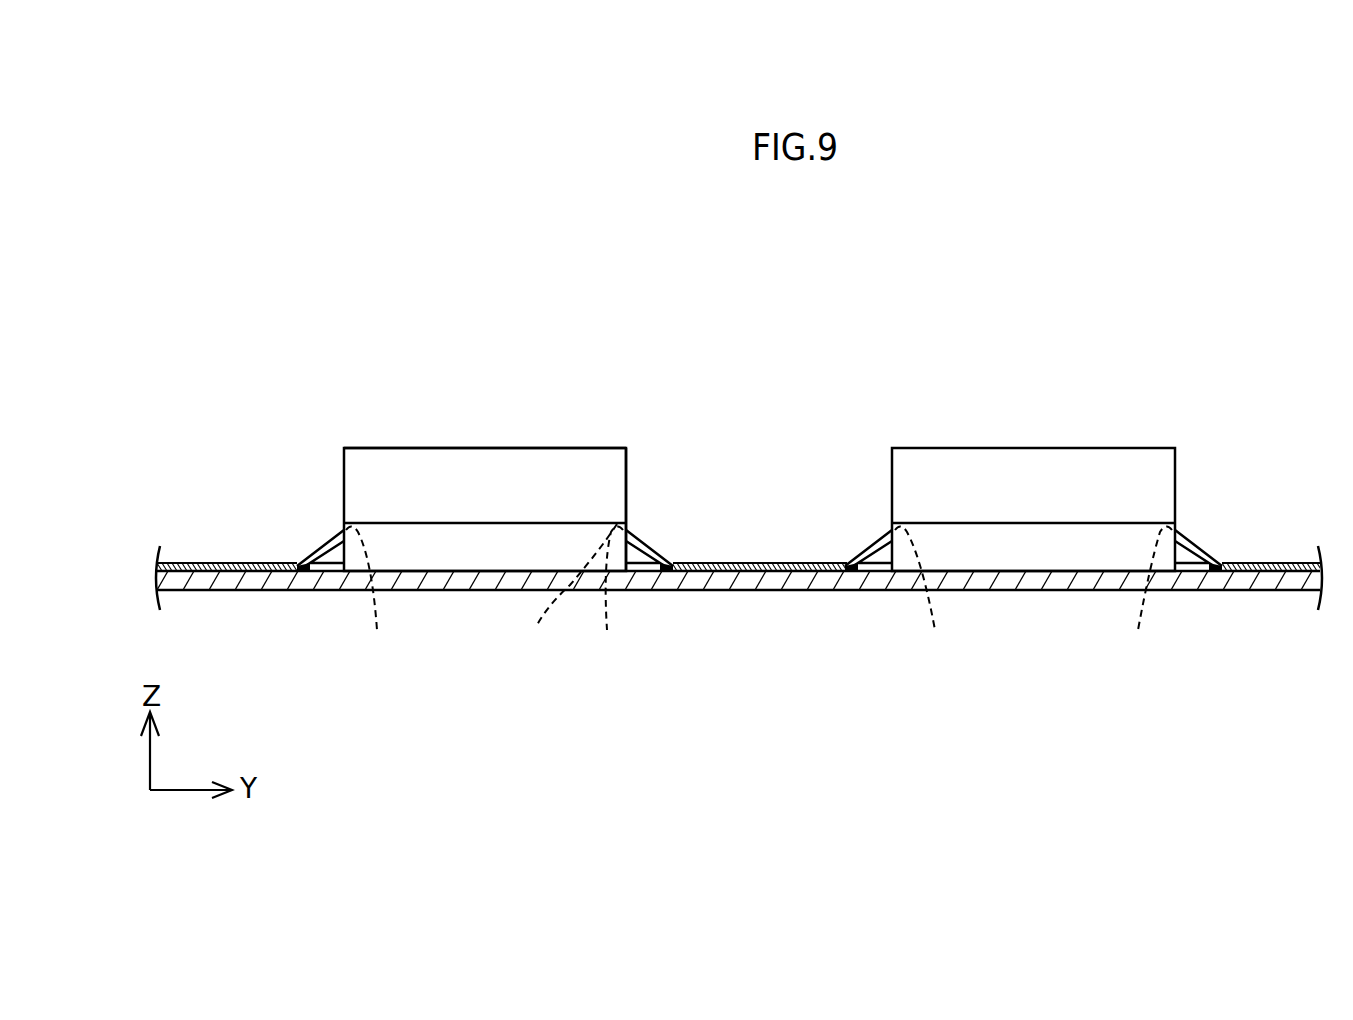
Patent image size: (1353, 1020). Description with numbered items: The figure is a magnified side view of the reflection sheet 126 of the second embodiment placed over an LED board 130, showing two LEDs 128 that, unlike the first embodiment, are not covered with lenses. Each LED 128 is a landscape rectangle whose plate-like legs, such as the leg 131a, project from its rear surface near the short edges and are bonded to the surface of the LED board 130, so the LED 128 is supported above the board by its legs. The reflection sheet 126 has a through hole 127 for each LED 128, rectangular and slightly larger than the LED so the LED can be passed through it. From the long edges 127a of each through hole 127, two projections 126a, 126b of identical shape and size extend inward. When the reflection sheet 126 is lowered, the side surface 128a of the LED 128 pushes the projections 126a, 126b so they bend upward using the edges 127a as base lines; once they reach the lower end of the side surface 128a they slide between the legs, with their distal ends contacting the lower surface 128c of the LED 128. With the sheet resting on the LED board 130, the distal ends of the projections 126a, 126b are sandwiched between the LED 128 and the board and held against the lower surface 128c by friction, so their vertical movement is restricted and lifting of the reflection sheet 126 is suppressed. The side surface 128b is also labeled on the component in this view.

The reflection sheet 126 is at (724, 568).
The projection 126a is at (657, 592).
The projection 126b is at (876, 592).
The through hole 127 is at (877, 643).
The long edge 127a is at (1222, 668).
The LED 128 is at (1018, 478).
The side surface 128a is at (556, 448).
The side surface of electronic component 128b is at (626, 488).
The lower surface 128c is at (562, 593).
The LED board 130 is at (776, 580).
The leg 131a is at (1031, 625).